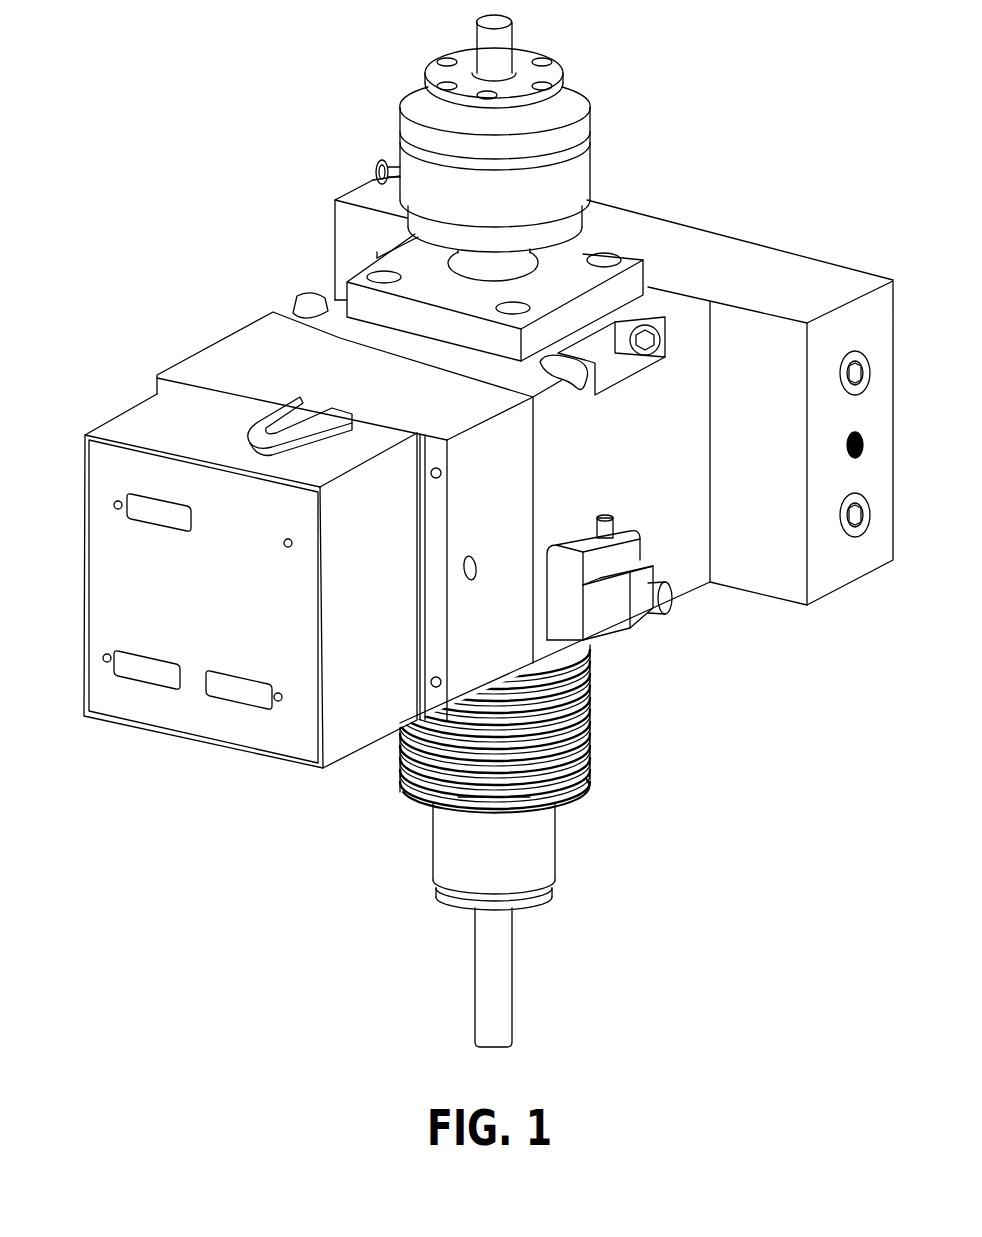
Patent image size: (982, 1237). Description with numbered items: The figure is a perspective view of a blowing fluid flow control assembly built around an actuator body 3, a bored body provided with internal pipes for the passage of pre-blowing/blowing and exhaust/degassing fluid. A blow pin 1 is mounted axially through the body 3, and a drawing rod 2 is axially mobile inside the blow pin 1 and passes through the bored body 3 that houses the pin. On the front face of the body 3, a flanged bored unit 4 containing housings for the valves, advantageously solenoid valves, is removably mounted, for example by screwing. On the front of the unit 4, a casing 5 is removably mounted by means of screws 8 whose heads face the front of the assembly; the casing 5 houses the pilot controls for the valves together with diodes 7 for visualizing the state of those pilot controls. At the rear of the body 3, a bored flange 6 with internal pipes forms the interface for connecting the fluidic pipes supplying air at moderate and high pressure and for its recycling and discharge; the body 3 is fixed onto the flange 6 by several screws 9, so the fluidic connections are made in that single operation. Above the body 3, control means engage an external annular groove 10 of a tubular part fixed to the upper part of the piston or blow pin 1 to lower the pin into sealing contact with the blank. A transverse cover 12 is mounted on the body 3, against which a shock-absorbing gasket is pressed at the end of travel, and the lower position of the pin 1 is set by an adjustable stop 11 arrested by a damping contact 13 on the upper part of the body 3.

The blow pin 1 is at (548, 840).
The drawing rod 2 is at (500, 960).
The body 3 is at (683, 578).
The unit 4 is at (220, 363).
The casing 5 is at (97, 618).
The bored flange 6 is at (763, 280).
The diodes 7 is at (114, 507).
The screws 8 is at (404, 727).
The screws 9 is at (657, 326).
The external annular groove 10 is at (588, 145).
The stop 11 is at (376, 168).
The transverse cover 12 is at (580, 253).
The damping contact 13 is at (385, 247).